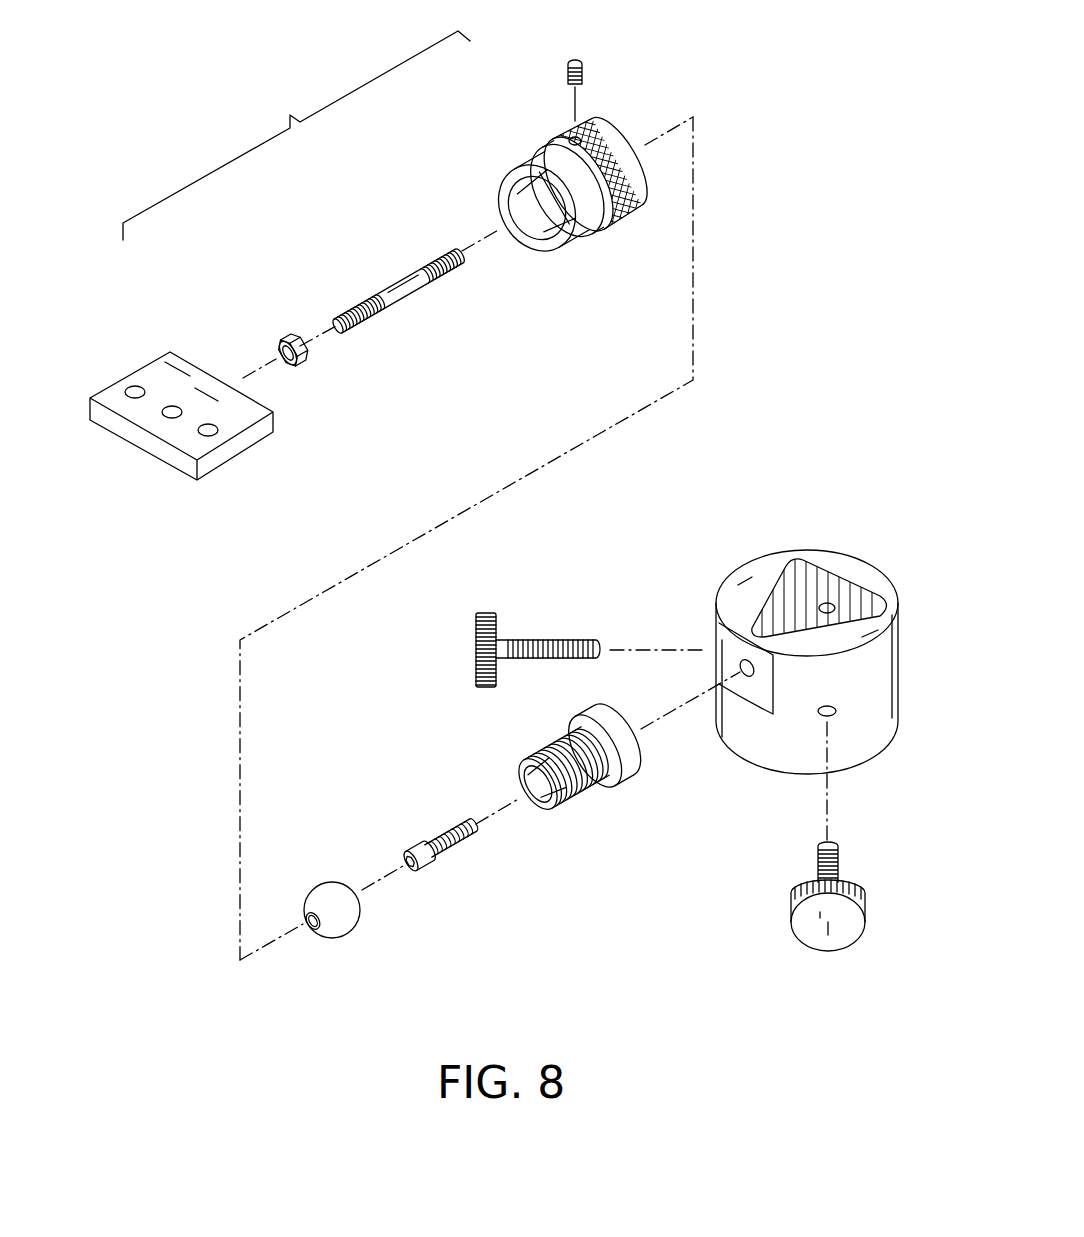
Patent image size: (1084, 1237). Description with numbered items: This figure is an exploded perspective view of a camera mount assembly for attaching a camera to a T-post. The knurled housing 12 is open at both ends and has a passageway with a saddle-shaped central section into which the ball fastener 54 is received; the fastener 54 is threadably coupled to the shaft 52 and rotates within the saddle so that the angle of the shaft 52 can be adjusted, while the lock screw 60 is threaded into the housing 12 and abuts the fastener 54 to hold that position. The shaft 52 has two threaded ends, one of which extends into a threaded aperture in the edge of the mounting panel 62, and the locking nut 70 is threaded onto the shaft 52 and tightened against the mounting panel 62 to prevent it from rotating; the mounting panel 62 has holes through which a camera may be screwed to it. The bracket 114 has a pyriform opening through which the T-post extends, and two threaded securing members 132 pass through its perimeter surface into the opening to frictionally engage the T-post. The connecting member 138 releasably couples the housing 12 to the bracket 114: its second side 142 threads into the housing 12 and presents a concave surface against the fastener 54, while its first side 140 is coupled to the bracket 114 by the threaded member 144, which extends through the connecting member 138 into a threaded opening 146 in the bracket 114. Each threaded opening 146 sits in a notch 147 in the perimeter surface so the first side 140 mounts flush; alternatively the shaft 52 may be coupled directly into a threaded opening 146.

The housing 12 is at (557, 248).
The shaft 52 is at (402, 300).
The fastener 54 is at (340, 938).
The lock screw 60 is at (586, 64).
The mounting panel 62 is at (196, 481).
The locking nut 70 is at (278, 342).
The bracket 114 is at (788, 648).
The securing members 132 is at (545, 640).
The connecting member 138 is at (636, 748).
The first side 140 is at (599, 813).
The second side 142 is at (542, 781).
The threaded member 144 is at (437, 845).
The threaded opening 146 is at (829, 604).
The notch 147 is at (773, 716).